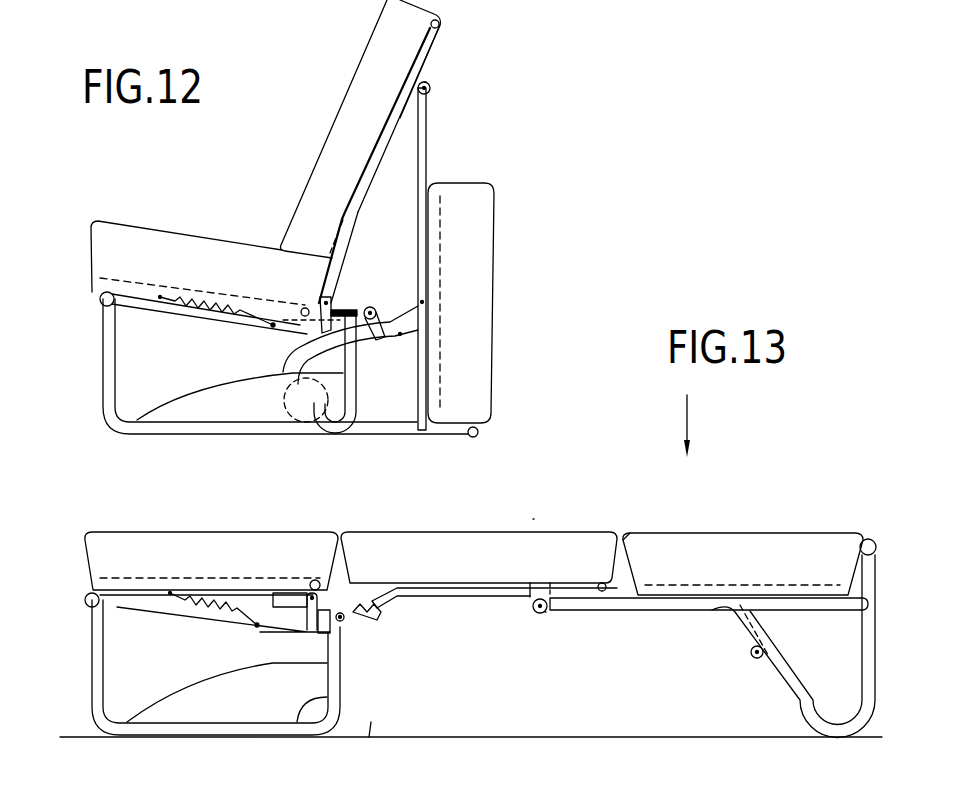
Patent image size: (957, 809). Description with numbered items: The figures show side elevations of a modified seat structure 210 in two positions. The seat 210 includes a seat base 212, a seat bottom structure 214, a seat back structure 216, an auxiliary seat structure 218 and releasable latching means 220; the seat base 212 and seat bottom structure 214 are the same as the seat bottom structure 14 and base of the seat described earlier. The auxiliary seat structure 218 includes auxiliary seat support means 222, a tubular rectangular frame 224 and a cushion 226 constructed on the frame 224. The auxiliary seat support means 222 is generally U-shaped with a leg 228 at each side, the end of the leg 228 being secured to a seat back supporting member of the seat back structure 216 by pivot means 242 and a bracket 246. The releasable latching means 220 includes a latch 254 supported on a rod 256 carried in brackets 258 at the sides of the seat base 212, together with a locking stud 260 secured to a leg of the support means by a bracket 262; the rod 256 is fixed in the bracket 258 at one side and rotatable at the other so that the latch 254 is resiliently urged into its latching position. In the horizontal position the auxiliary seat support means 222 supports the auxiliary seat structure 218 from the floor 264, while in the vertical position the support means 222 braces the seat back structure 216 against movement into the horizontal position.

In FIG. 13, the seat bottom structure 14 is at (690, 425).
In FIG. 12, the modified seat structure 210 is at (338, 56).
In FIG. 13, the modified seat structure 210 is at (540, 511).
In FIG. 12, the seat base 212 is at (103, 362).
In FIG. 13, the seat base 212 is at (93, 660).
In FIG. 12, the seat bottom structure 214 is at (137, 222).
In FIG. 13, the seat bottom structure 214 is at (205, 532).
In FIG. 12, the seat back structure 216 is at (325, 137).
In FIG. 13, the seat back structure 216 is at (455, 532).
In FIG. 12, the auxiliary seat structure 218 is at (494, 226).
In FIG. 13, the auxiliary seat structure 218 is at (808, 533).
In FIG. 12, the releasable latching means 220 is at (338, 316).
In FIG. 12, the auxiliary seat support means 222 is at (335, 374).
In FIG. 13, the auxiliary seat support means 222 is at (773, 683).
In FIG. 12, the tubular rectangular frame 224 is at (432, 326).
In FIG. 13, the tubular rectangular frame 224 is at (688, 592).
In FIG. 13, the cushion 226 is at (695, 533).
In FIG. 12, the leg 228 is at (430, 157).
In FIG. 13, the leg 228 is at (595, 610).
In FIG. 12, the pivot means 242 is at (430, 90).
In FIG. 13, the pivot means 242 is at (537, 608).
In FIG. 12, the bracket 246 is at (425, 82).
In FIG. 13, the bracket 246 is at (545, 615).
In FIG. 12, the latch 254 is at (369, 306).
In FIG. 13, the latch 254 is at (370, 617).
In FIG. 12, the rod 256 is at (217, 312).
In FIG. 13, the rod 256 is at (350, 630).
In FIG. 13, the bracket 258 is at (340, 640).
In FIG. 12, the locking stud 260 is at (405, 338).
In FIG. 13, the locking stud 260 is at (755, 648).
In FIG. 12, the bracket 262 is at (360, 332).
In FIG. 13, the bracket 262 is at (760, 660).
In FIG. 13, the floor 264 is at (368, 737).